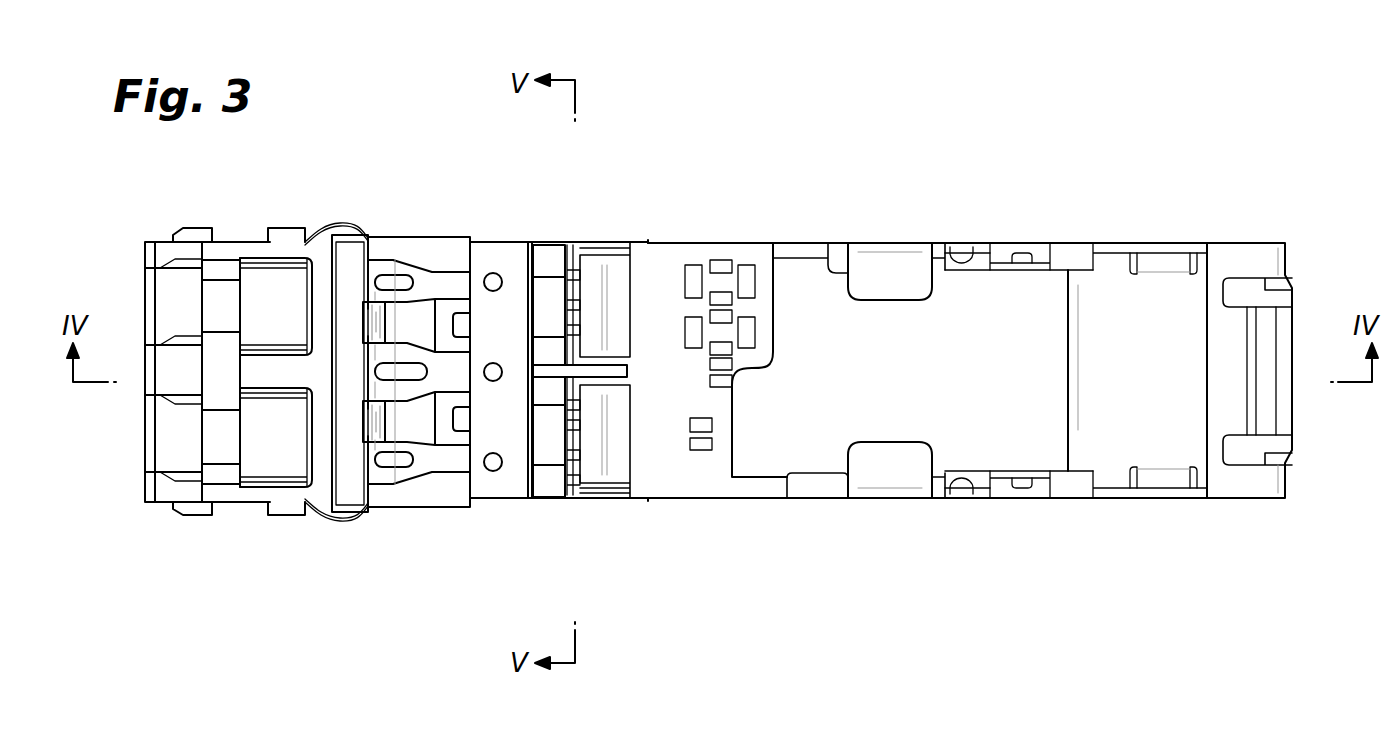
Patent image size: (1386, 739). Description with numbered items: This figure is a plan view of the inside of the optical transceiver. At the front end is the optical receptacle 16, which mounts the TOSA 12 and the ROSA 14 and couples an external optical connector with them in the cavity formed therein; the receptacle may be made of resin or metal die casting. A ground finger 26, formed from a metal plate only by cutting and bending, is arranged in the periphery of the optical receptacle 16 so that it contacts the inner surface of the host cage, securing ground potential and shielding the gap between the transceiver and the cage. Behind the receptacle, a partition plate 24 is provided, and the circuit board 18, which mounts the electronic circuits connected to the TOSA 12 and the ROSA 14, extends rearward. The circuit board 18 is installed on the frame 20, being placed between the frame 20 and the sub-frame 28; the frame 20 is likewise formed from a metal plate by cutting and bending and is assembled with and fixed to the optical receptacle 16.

The TOSA 12 is at (551, 295).
The ROSA 14 is at (552, 443).
The optical receptacle 16 is at (286, 505).
The circuit board 18 is at (695, 468).
The frame 20 is at (632, 500).
The partition plate 24 is at (552, 365).
The ground finger 26 is at (490, 258).
The sub-frame 28 is at (960, 428).